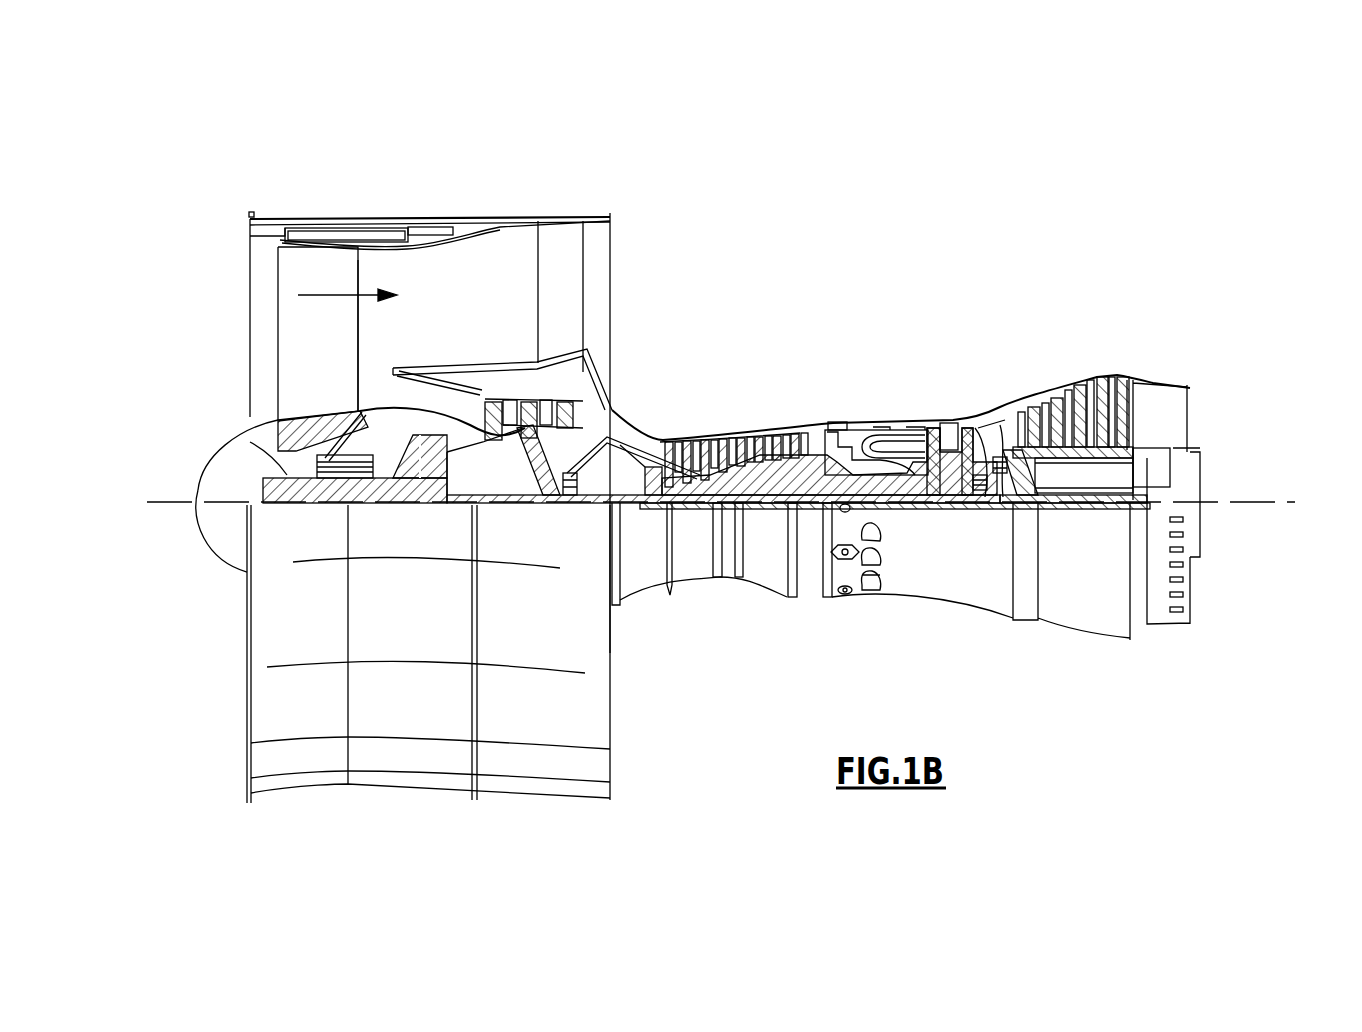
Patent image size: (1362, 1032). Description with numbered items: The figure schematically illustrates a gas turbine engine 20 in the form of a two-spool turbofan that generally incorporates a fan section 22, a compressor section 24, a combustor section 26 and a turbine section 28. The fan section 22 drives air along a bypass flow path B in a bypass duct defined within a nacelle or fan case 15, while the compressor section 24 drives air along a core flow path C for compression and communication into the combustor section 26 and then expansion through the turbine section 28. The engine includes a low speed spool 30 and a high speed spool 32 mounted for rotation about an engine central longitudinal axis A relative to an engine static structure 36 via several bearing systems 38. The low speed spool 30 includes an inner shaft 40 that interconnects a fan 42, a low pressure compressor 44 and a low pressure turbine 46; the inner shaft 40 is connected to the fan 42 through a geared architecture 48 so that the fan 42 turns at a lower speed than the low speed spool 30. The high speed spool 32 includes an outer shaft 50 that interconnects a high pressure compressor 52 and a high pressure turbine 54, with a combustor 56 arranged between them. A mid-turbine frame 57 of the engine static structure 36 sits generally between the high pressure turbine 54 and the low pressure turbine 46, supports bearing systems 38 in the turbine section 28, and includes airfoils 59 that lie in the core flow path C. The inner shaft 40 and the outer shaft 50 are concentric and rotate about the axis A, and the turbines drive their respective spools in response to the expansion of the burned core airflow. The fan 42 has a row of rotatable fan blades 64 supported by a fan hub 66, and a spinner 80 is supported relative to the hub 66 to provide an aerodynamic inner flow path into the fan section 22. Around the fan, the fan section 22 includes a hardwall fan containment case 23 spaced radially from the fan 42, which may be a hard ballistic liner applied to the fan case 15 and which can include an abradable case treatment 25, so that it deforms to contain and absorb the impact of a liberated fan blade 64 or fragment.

The nacelle / fan case 15 is at (425, 219).
The gas turbine engine 20 is at (896, 268).
The fan section 22 is at (363, 206).
The fan containment case 23 is at (378, 220).
The compressor section 24 is at (661, 408).
The abradable case treatment 25 is at (398, 247).
The combustor section 26 is at (884, 396).
The turbine section 28 is at (1033, 358).
The low speed spool 30 is at (770, 514).
The high speed spool 32 is at (808, 472).
The engine static structure 36 is at (808, 597).
The bearing systems 38 is at (560, 482).
The inner shaft 40 is at (630, 507).
The fan 42 is at (301, 350).
The low pressure compressor 44 is at (560, 400).
The low pressure turbine 46 is at (1078, 400).
The geared architecture 48 is at (430, 483).
The outer shaft 50 is at (885, 485).
The high pressure compressor 52 is at (740, 478).
The high pressure turbine 54 is at (952, 420).
The combustor 56 is at (885, 445).
The mid-turbine frame 57 is at (996, 405).
The airfoils 59 is at (1020, 470).
The fan blades 64 is at (362, 352).
The fan hub 66 is at (262, 442).
The spinner 80 is at (197, 490).
The engine central longitudinal axis A is at (1275, 502).
The bypass flow path B is at (331, 292).
The core flow path C is at (425, 401).